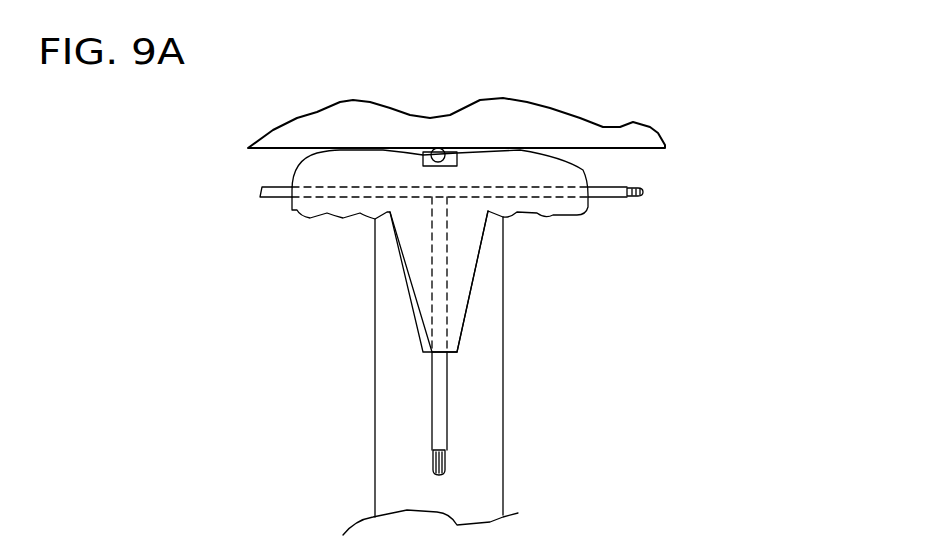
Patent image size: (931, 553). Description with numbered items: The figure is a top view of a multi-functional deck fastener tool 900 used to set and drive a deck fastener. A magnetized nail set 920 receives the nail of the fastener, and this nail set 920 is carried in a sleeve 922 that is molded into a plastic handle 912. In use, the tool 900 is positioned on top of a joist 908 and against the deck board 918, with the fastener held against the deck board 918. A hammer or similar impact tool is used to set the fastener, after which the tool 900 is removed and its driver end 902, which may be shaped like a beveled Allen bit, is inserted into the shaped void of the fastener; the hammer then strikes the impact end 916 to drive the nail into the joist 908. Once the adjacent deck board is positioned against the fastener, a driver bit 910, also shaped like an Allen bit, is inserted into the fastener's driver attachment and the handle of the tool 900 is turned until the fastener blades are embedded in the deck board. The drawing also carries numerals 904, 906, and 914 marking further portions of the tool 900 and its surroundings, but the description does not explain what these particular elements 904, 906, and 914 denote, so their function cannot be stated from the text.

The multi-functional deck fastener tool 900 is at (580, 145).
The driver end 902 is at (643, 193).
The upper body 904 is at (537, 197).
The bolt 906 is at (447, 328).
The joist 908 is at (503, 423).
The driver bit 910 is at (448, 458).
The plastic handle 912 is at (417, 322).
The cross rod (hidden) 914 is at (345, 197).
The impact end 916 is at (260, 197).
The deck board 918 is at (468, 130).
The magnetized nail set 920 is at (438, 148).
The sleeve 922 is at (385, 150).